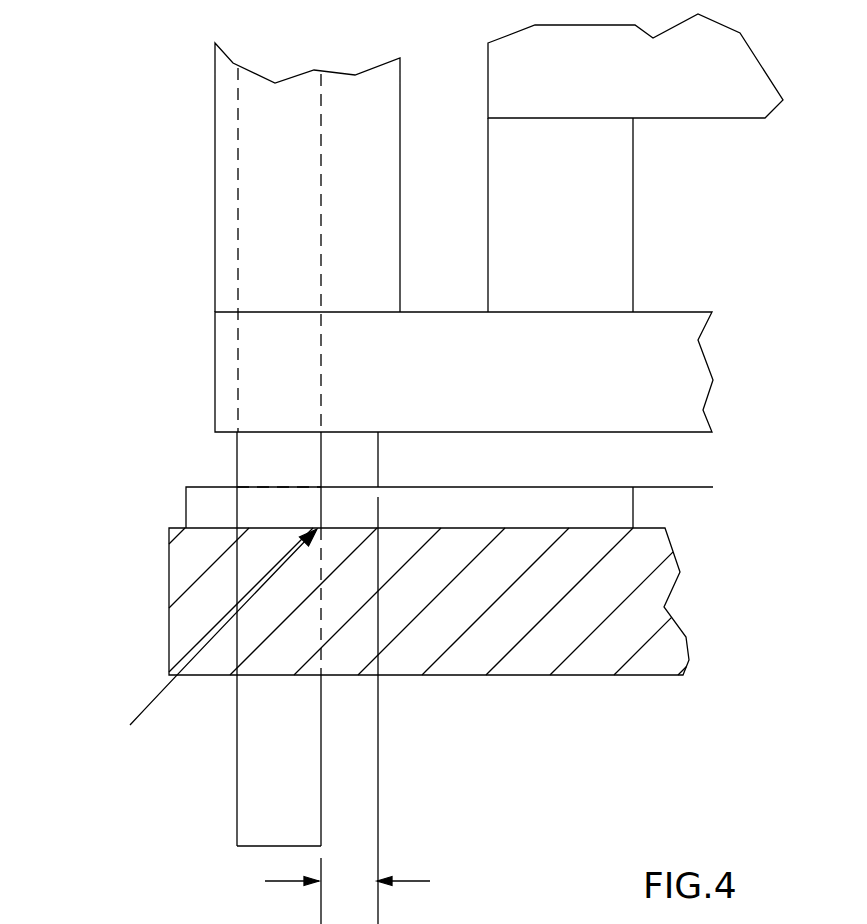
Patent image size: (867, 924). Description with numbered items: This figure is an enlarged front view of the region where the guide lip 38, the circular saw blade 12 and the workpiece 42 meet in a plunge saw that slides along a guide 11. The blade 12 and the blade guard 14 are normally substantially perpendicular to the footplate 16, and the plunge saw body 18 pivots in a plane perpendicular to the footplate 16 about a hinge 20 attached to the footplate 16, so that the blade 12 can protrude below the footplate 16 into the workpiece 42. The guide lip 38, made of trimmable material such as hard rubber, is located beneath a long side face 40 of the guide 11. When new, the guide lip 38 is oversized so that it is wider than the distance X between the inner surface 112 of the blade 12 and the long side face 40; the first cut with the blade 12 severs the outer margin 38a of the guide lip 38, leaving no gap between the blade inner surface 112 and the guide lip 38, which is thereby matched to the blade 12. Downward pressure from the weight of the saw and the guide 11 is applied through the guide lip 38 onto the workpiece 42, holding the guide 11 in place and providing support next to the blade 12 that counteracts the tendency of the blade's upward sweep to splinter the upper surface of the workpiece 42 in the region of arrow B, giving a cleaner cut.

The guide 11 is at (653, 457).
The circular saw blade 12 is at (262, 465).
The blade guard 14 is at (223, 170).
The footplate 16 is at (535, 381).
The plunge saw body 18 is at (622, 80).
The hinge 20 is at (586, 212).
The guide lip 38 is at (530, 510).
The outer margin 38a is at (214, 509).
The long side face 40 is at (378, 458).
The workpiece 42 is at (605, 583).
The inner surface 112 is at (320, 769).
The arrow B is at (211, 645).
The distance X is at (347, 882).